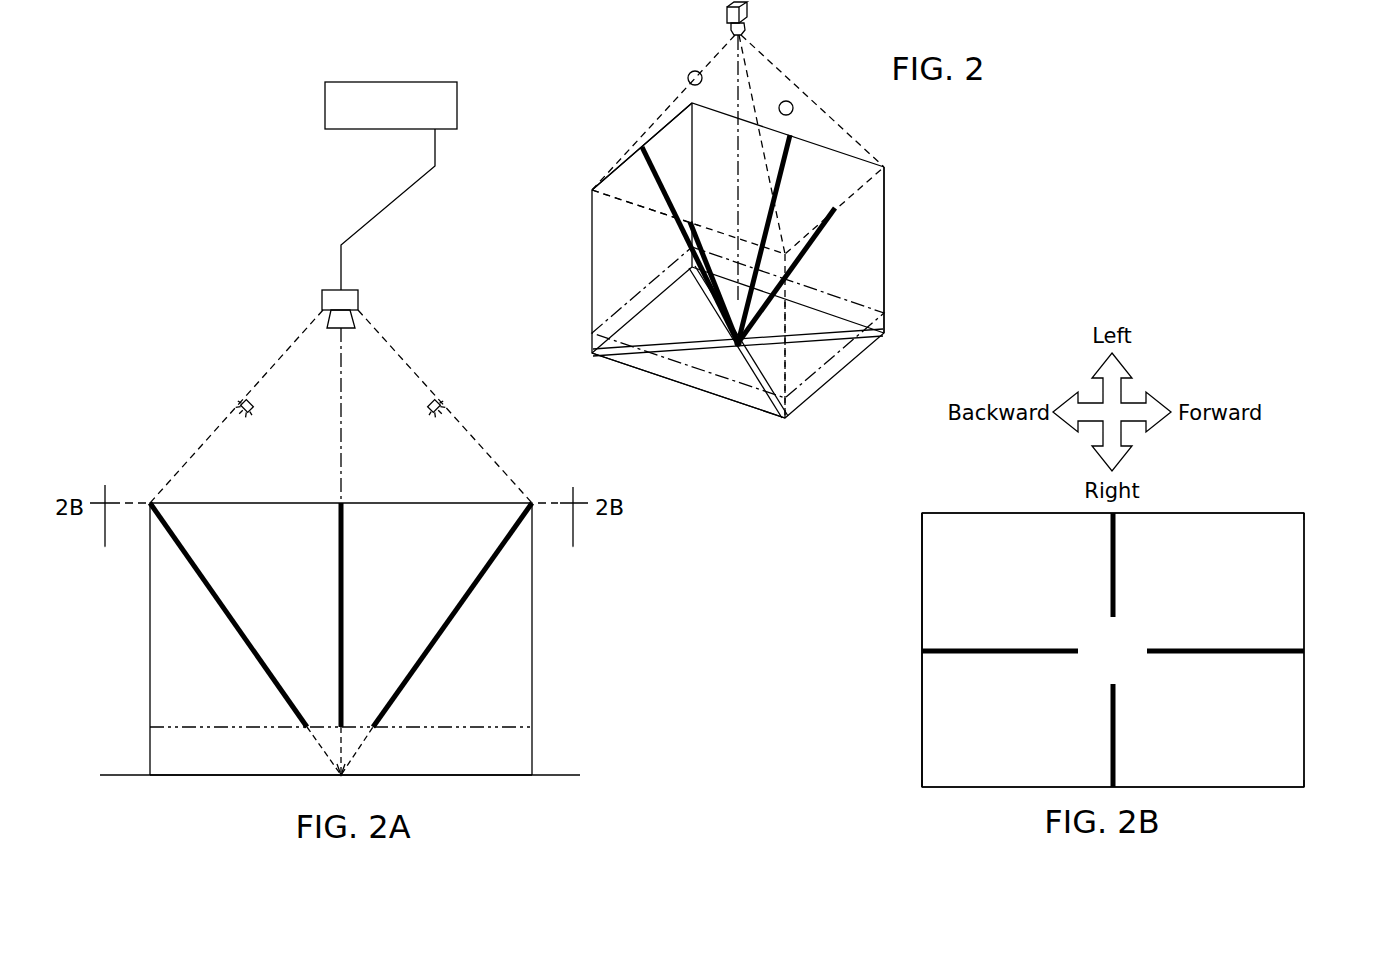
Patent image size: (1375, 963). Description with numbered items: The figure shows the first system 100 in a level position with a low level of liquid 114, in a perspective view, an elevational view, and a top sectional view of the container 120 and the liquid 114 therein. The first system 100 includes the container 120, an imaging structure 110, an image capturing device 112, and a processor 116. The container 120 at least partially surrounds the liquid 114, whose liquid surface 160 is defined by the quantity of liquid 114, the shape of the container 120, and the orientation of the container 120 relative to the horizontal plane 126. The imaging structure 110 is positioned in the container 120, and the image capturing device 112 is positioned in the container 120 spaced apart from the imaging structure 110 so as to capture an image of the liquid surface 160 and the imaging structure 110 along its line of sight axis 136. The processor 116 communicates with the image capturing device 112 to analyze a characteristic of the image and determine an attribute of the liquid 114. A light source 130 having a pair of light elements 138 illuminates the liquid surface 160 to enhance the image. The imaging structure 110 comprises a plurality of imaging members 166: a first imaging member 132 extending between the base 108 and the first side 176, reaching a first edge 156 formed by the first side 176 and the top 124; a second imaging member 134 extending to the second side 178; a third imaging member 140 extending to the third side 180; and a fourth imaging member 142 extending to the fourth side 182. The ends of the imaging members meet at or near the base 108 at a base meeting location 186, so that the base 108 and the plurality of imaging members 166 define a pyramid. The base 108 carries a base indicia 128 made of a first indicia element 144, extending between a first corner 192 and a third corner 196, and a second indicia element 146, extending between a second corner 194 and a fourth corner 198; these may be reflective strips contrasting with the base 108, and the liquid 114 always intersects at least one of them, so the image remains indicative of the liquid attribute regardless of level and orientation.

In FIG. 2, the first system 100 is at (906, 158).
In FIG. 2A, the first system 100 is at (111, 330).
In FIG. 2B, the first system 100 is at (1225, 496).
In FIG. 2, the base 108 is at (628, 368).
In FIG. 2A, the base 108 is at (493, 777).
In FIG. 2, the imaging structure 110 is at (872, 233).
In FIG. 2A, the imaging structure 110 is at (192, 587).
In FIG. 2B, the imaging structure 110 is at (976, 676).
In FIG. 2, the image capturing device 112 is at (750, 15).
In FIG. 2A, the image capturing device 112 is at (330, 288).
In FIG. 2A, the liquid 114 is at (460, 764).
In FIG. 2A, the processor 116 is at (325, 92).
In FIG. 2, the container 120 is at (887, 295).
In FIG. 2, the top 124 is at (607, 175).
In FIG. 2A, the horizontal plane 126 is at (563, 771).
In FIG. 2, the base indicia 128 is at (797, 367).
In FIG. 2, the light source 130 is at (716, 17).
In FIG. 2A, the light source 130 is at (302, 298).
In FIG. 2, the first imaging member 132 is at (704, 254).
In FIG. 2A, the first imaging member 132 is at (344, 560).
In FIG. 2B, the first imaging member 132 is at (1111, 723).
In FIG. 2, the second imaging member 134 is at (805, 252).
In FIG. 2A, the second imaging member 134 is at (455, 618).
In FIG. 2B, the second imaging member 134 is at (1233, 653).
In FIG. 2, the line of sight axis 136 is at (735, 182).
In FIG. 2A, the line of sight axis 136 is at (344, 470).
In FIG. 2, the light elements 138 is at (688, 77).
In FIG. 2A, the light elements 138 is at (240, 397).
In FIG. 2, the third imaging member 140 is at (666, 200).
In FIG. 2A, the third imaging member 140 is at (216, 596).
In FIG. 2B, the third imaging member 140 is at (993, 648).
In FIG. 2, the fourth imaging member 142 is at (786, 165).
In FIG. 2B, the fourth imaging member 142 is at (1117, 562).
In FIG. 2, the first indicia element 144 is at (767, 389).
In FIG. 2, the second indicia element 146 is at (838, 344).
In FIG. 2, the first edge 156 is at (596, 207).
In FIG. 2A, the liquid surface 160 is at (210, 725).
In FIG. 2, the plurality of imaging members 166 is at (872, 205).
In FIG. 2B, the plurality of imaging members 166 is at (976, 709).
In FIG. 2B, the first side 176 is at (1217, 787).
In FIG. 2B, the second side 178 is at (1305, 612).
In FIG. 2B, the third side 180 is at (1257, 512).
In FIG. 2B, the fourth side 182 is at (920, 555).
In FIG. 2, the base meeting location 186 is at (736, 346).
In FIG. 2B, the first corner 192 is at (1342, 793).
In FIG. 2B, the second corner 194 is at (1347, 500).
In FIG. 2B, the third corner 196 is at (922, 513).
In FIG. 2B, the fourth corner 198 is at (922, 795).